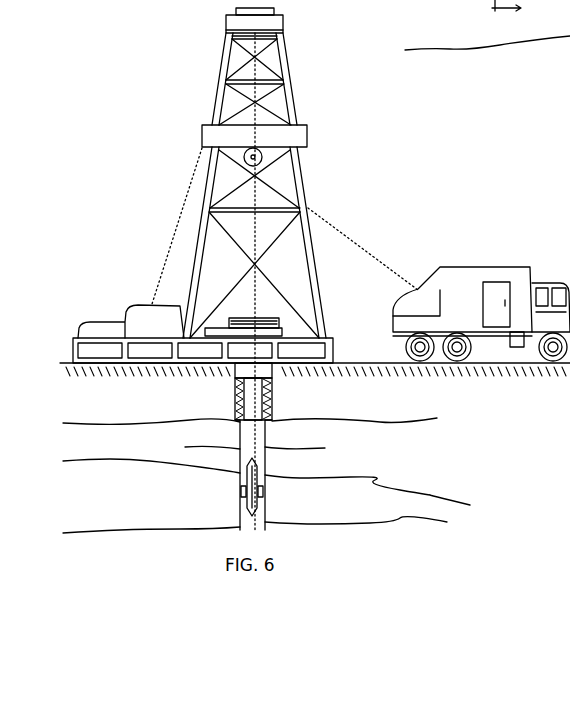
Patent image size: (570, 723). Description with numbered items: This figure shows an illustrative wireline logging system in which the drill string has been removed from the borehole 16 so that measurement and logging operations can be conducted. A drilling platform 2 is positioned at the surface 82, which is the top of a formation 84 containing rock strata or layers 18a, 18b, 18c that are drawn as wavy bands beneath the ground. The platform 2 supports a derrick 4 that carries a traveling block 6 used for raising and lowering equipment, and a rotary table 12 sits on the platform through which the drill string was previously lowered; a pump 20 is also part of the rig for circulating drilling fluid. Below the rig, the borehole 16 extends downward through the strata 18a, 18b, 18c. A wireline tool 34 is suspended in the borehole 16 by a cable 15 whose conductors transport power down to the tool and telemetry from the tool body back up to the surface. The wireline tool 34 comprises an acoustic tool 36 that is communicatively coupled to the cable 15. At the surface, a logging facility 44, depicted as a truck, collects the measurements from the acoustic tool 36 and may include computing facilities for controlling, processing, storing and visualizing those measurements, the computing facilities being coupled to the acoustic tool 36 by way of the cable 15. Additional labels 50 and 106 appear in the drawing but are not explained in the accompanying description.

The drilling platform 2 is at (337, 353).
The derrick 4 is at (320, 257).
The traveling block 6 is at (262, 151).
The rotary table 12 is at (262, 318).
The cable 15 is at (236, 392).
The borehole 16 is at (260, 437).
The rock stratum 18a is at (425, 405).
The rock stratum 18b is at (100, 450).
The rock stratum 18c is at (100, 521).
The pump 20 is at (563, 13).
The wireline tool 34 is at (246, 478).
The acoustic tool 36 is at (241, 491).
The logging facility 44 is at (474, 267).
The sensor module 50 is at (486, 3).
The surface 82 is at (65, 352).
The formation 84 is at (556, 434).
The fracture zone 106 is at (311, 447).